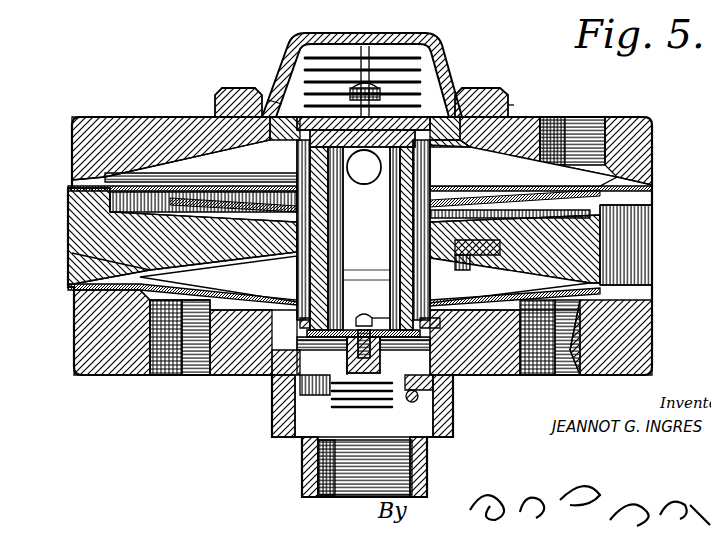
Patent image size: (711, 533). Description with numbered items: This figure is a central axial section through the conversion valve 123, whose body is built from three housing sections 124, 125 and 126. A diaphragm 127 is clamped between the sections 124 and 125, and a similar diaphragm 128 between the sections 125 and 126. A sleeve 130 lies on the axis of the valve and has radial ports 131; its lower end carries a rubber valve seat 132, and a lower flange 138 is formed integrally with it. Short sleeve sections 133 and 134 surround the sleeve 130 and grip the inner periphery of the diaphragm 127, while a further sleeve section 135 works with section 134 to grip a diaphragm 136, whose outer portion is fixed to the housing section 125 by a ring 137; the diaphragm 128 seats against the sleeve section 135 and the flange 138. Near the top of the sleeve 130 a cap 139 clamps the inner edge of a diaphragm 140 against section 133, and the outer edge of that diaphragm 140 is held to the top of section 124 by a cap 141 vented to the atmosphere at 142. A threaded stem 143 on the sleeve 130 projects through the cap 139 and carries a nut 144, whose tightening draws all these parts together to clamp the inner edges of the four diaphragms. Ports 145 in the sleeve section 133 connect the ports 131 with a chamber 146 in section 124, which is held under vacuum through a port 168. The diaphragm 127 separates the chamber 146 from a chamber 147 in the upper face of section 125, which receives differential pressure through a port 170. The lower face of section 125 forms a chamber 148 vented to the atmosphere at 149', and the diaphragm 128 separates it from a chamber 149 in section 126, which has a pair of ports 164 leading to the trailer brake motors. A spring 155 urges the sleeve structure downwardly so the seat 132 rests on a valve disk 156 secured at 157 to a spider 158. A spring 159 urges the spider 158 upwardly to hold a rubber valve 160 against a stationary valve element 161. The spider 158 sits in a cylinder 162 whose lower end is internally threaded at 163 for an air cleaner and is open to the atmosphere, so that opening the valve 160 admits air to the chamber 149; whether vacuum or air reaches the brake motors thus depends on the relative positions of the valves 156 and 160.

The conversion valve 123 is at (76, 117).
The housing section 124 is at (72, 154).
The housing section 125 is at (68, 202).
The housing section 126 is at (84, 336).
The diaphragm 127 is at (654, 170).
The diaphragm 128 is at (580, 296).
The sleeve 130 is at (404, 256).
The radial ports 131 is at (393, 170).
The valve seat 132 is at (421, 334).
The sleeve section 133 is at (472, 170).
The sleeve section 134 is at (425, 230).
The sleeve section 135 is at (412, 280).
The diaphragm 136 is at (470, 263).
The ring 137 is at (490, 256).
The lower flange 138 is at (428, 312).
The cap 139 is at (478, 95).
The diaphragm 140 is at (491, 91).
The cap 141 is at (510, 102).
The vent 142 is at (278, 70).
The threaded stem 143 is at (366, 95).
The nut 144 is at (413, 102).
The ports 145 is at (523, 165).
The chamber 146 is at (207, 158).
The chamber 147 is at (125, 212).
The chamber 148 is at (218, 279).
The chamber 149 is at (182, 303).
The vent 149' is at (84, 263).
The spring 155 is at (400, 62).
The valve disk 156 is at (396, 322).
The securing means 157 is at (360, 316).
The spider 158 is at (418, 404).
The spring 159 is at (335, 412).
The rubber valve 160 is at (418, 390).
The stationary valve element 161 is at (275, 392).
The cylinder 162 is at (305, 400).
The internal threads 163 is at (326, 500).
The ports 164 is at (185, 360).
The port 168 is at (592, 117).
The port 170 is at (650, 258).